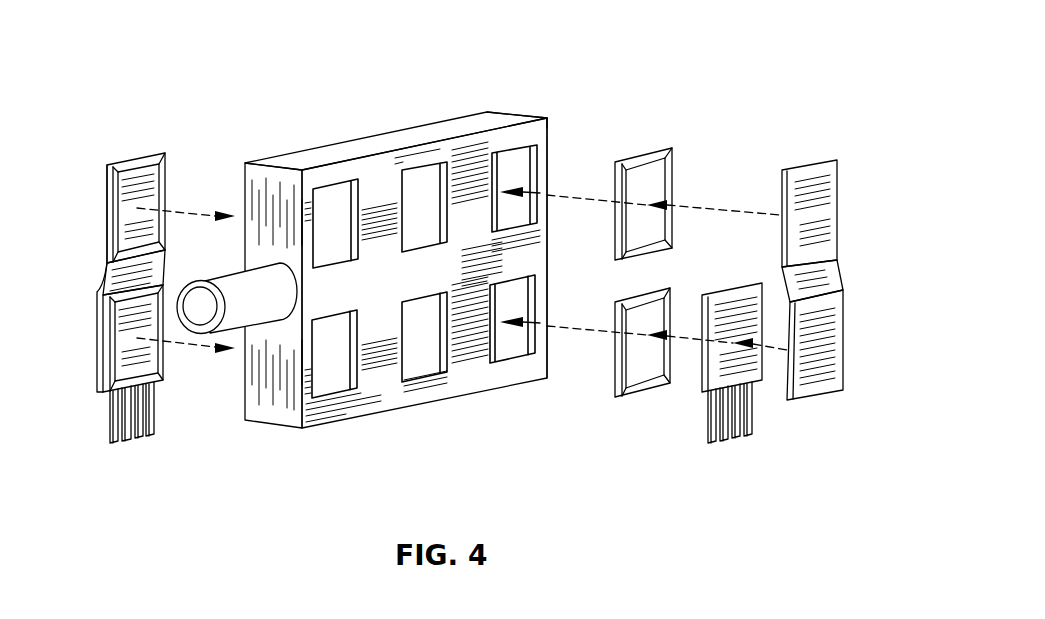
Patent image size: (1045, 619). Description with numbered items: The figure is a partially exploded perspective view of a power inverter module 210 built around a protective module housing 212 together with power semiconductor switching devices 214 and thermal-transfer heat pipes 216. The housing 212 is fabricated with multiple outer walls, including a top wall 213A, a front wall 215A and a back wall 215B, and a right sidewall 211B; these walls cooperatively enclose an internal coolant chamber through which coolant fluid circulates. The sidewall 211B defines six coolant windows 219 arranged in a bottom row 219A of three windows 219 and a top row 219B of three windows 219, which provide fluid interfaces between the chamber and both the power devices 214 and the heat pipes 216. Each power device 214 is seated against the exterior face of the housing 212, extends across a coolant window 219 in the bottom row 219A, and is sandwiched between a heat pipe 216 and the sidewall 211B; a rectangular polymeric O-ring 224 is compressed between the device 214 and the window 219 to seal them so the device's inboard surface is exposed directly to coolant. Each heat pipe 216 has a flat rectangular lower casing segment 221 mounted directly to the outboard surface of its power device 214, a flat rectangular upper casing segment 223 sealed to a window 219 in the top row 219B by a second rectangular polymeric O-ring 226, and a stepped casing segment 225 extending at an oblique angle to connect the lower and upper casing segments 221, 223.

The power inverter module 210 is at (205, 52).
The module housing 212 is at (263, 158).
The top wall 213A is at (383, 143).
The front wall 215A is at (270, 410).
The back wall 215B is at (550, 160).
The right sidewall 211B is at (547, 120).
The coolant window 219 is at (353, 200).
The bottom row of coolant windows 219A is at (300, 361).
The top row of coolant windows 219B is at (300, 221).
The heat pipe 216 is at (107, 207).
The power semiconductor switching device 214 is at (105, 397).
The upper casing segment 223 is at (823, 200).
The stepped casing segment 225 is at (833, 280).
The lower casing segment 221 is at (835, 365).
The first polymeric O-ring 224 is at (613, 367).
The second polymeric O-ring 226 is at (607, 255).